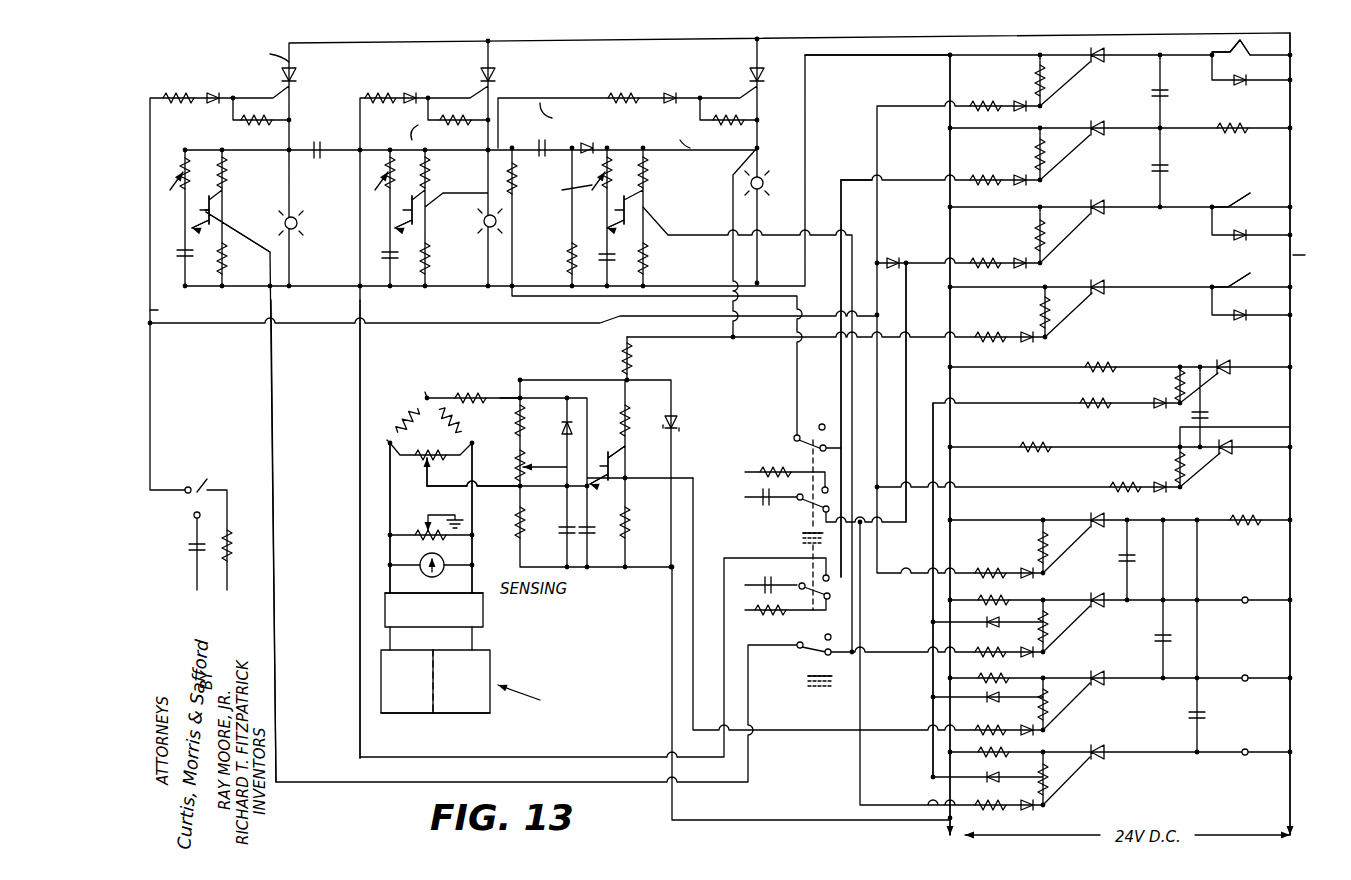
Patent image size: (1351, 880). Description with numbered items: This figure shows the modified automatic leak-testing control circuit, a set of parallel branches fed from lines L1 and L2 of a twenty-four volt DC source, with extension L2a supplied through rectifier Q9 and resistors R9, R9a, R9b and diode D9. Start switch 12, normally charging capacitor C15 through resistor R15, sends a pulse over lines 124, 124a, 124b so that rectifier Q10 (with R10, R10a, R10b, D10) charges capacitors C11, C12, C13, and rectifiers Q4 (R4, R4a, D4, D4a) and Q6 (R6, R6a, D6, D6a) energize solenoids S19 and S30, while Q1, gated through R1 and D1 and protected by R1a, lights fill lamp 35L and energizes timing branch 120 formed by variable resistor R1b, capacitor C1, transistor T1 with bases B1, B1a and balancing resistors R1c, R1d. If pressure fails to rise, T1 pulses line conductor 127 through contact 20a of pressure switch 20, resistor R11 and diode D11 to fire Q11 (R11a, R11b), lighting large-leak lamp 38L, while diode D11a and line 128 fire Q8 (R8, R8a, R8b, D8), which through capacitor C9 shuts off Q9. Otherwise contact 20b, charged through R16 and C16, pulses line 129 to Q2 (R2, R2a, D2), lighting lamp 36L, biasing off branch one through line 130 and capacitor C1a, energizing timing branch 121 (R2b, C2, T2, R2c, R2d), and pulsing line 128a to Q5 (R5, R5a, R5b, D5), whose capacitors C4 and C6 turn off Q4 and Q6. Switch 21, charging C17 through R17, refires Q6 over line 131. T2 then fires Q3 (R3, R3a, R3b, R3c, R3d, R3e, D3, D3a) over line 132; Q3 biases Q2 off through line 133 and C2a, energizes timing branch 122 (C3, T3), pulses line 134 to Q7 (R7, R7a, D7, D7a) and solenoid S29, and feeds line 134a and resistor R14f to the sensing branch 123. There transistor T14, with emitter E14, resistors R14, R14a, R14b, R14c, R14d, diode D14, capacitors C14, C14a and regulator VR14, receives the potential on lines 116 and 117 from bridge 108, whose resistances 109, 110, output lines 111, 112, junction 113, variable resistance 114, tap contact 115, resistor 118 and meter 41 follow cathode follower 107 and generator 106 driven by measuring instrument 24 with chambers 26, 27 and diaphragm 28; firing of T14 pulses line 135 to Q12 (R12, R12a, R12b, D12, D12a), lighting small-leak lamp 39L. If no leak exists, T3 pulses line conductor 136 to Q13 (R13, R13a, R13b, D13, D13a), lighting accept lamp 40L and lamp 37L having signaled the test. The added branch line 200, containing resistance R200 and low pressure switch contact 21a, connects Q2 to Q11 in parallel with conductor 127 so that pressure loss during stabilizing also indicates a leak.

The start switch 12 is at (201, 488).
The pressure responsive switch 20 is at (800, 665).
The contact of pressure switch 20a is at (796, 651).
The contact of pressure switch 20b is at (807, 571).
The pressure switch 21 is at (790, 515).
The low pressure switch 21a is at (797, 430).
The measuring instrument 24 is at (498, 685).
The chamber 26 is at (402, 718).
The chamber 27 is at (480, 718).
The diaphragm 28 is at (433, 713).
The electric lamp 35L is at (305, 227).
The electric lamp 36L is at (482, 224).
The electric lamp 37L is at (770, 192).
The lamp 38L is at (1247, 568).
The lamp 39L is at (1247, 646).
The lamp 40L is at (1248, 721).
The meter 41 is at (420, 565).
The oscillating generator 106 is at (398, 620).
The cathode follower 107 is at (385, 612).
The electric bridge 108 is at (405, 410).
The resistance 109 is at (386, 428).
The resistance 110 is at (470, 420).
The output line 111 is at (390, 510).
The output line 112 is at (472, 510).
The junction 113 is at (427, 395).
The variable resistance 114 is at (431, 444).
The tap contact 115 is at (414, 477).
The line 116 is at (473, 485).
The line 117 is at (495, 396).
The resistor 118 is at (468, 397).
The timing branch 120 is at (188, 226).
The timing branch 121 is at (410, 233).
The timing branch 122 is at (622, 232).
The leak sensing circuit branch 123 is at (609, 490).
The line 124 is at (513, 333).
The line 124a is at (841, 365).
The line 124b is at (174, 309).
The line conductor 127 is at (275, 450).
The line conductor 128 is at (933, 598).
The line 128a is at (850, 173).
The line 129 is at (360, 352).
The line 130 is at (395, 129).
The line conductor 131 is at (906, 300).
The line conductor 132 is at (562, 110).
The line 133 is at (672, 136).
The line 134 is at (733, 328).
The branch line 134a is at (660, 340).
The line 135 is at (693, 480).
The line conductor 136 is at (747, 429).
The branch line 200 is at (682, 297).
The line L1 is at (860, 58).
The line L2 is at (1306, 438).
The extension of line L2a is at (786, 152).
The solenoid winding S19 is at (1242, 52).
The solenoid winding S29 is at (1246, 287).
The solenoid winding S30 is at (1244, 207).
The resistor R1 is at (173, 88).
The resistor R1a is at (250, 128).
The variable resistor R1b is at (173, 157).
The balancing resistor R1c is at (239, 168).
The balancing resistor R1d is at (239, 259).
The resistor R2 is at (380, 84).
The resistor R2a is at (454, 128).
The variable resistor R2b is at (361, 172).
The balancing resistor R2c is at (443, 168).
The balancing resistor R2d is at (443, 259).
The resistor R3 is at (623, 84).
The resistor R3a is at (727, 128).
The variable resistor R3b is at (557, 193).
The balancing resistor R3c is at (668, 176).
The balancing resistor R3d is at (660, 259).
The resistor R3e is at (551, 259).
The resistance R200 is at (534, 178).
The resistor R4 is at (980, 96).
The resistor R4a is at (1020, 80).
The resistor R5 is at (979, 171).
The resistor R5a is at (1018, 153).
The resistor R5b is at (1231, 138).
The resistor R6 is at (979, 255).
The resistor R6a is at (1018, 232).
The resistor R7 is at (982, 329).
The resistor R7a is at (1021, 310).
The resistor R8 is at (1095, 393).
The resistance R8a is at (1161, 385).
The resistance R8b is at (1101, 356).
The resistor R9 is at (1119, 477).
The resistance R9a is at (1162, 467).
The resistance R9b is at (1028, 437).
The resistor R10 is at (982, 566).
The resistor R10a is at (1021, 545).
The resistor R10b is at (1247, 511).
The resistor R11 is at (982, 645).
The resistance R11a is at (1074, 626).
The resistance R11b is at (1018, 590).
The resistor R12 is at (982, 723).
The resistance R12a is at (1082, 704).
The resistance R12b is at (982, 670).
The resistor R13 is at (982, 798).
The resistance R13a is at (1074, 779).
The resistance R13b is at (982, 744).
The balancing resistor R14 is at (536, 420).
The balancing resistor R14a is at (541, 522).
The variable resistor R14b is at (502, 464).
The resistor R14c is at (647, 413).
The resistor R14d is at (647, 522).
The resistor R14f is at (603, 358).
The resistor R15 is at (245, 568).
The resistance R16 is at (758, 619).
The resistance R17 is at (779, 468).
The capacitor C1 is at (176, 261).
The capacitor C1a is at (316, 138).
The capacitor C2 is at (380, 263).
The condenser C2a is at (522, 136).
The capacitor C3 is at (596, 265).
The capacitor C4 is at (1148, 85).
The capacitor C6 is at (1148, 163).
The capacitor C9 is at (1215, 415).
The capacitor C11 is at (1116, 547).
The capacitor C12 is at (1149, 629).
The capacitor C13 is at (1177, 708).
The capacitor C14 is at (552, 542).
The capacitor C14a is at (604, 543).
The capacitor C15 is at (182, 575).
The capacitor C16 is at (781, 581).
The capacitor C17 is at (780, 506).
The isolating diode D1 is at (213, 84).
The diode D2 is at (419, 83).
The diode D3 is at (673, 84).
The diode D3a is at (600, 135).
The diode D4 is at (1017, 95).
The diode D4a is at (1237, 90).
The diode D5 is at (1015, 169).
The diode D6 is at (1015, 253).
The diode D6a is at (1228, 246).
The diode D7 is at (1020, 328).
The diode D7a is at (1257, 324).
The diode D8 is at (1145, 415).
The diode D9 is at (1155, 497).
The diode D10 is at (1020, 564).
The diode D11 is at (1023, 644).
The isolating diode D11a is at (978, 614).
The diode D12 is at (1023, 721).
The diode D12a is at (978, 691).
The diode D13 is at (1023, 796).
The diode D13a is at (978, 770).
The directional diode D14 is at (555, 433).
The voltage regulator VR14 is at (695, 422).
The silicon control rectifier Q1 is at (285, 71).
The silicon control rectifier Q2 is at (501, 71).
The silicon control rectifier Q3 is at (756, 70).
The silicon control rectifier Q4 is at (1100, 64).
The silicon control rectifier Q5 is at (1100, 138).
The silicon control rectifier Q6 is at (1100, 218).
The silicon control rectifier Q7 is at (1101, 295).
The silicon control rectifier Q8 is at (1228, 367).
The silicon control rectifier Q9 is at (1240, 458).
The silicon control rectifier Q10 is at (1081, 534).
The silicon control rectifier Q11 is at (1089, 627).
The silicon control rectifier Q12 is at (1094, 702).
The silicon control rectifier Q13 is at (1092, 779).
The unijunctional transistor T1 is at (204, 198).
The unijunctional transistor T2 is at (391, 198).
The unijunctional transistor T3 is at (606, 190).
The unijunctional transistor T14 is at (609, 454).
The base B1 is at (236, 189).
The base B1a is at (238, 232).
The emitter E14 is at (612, 470).